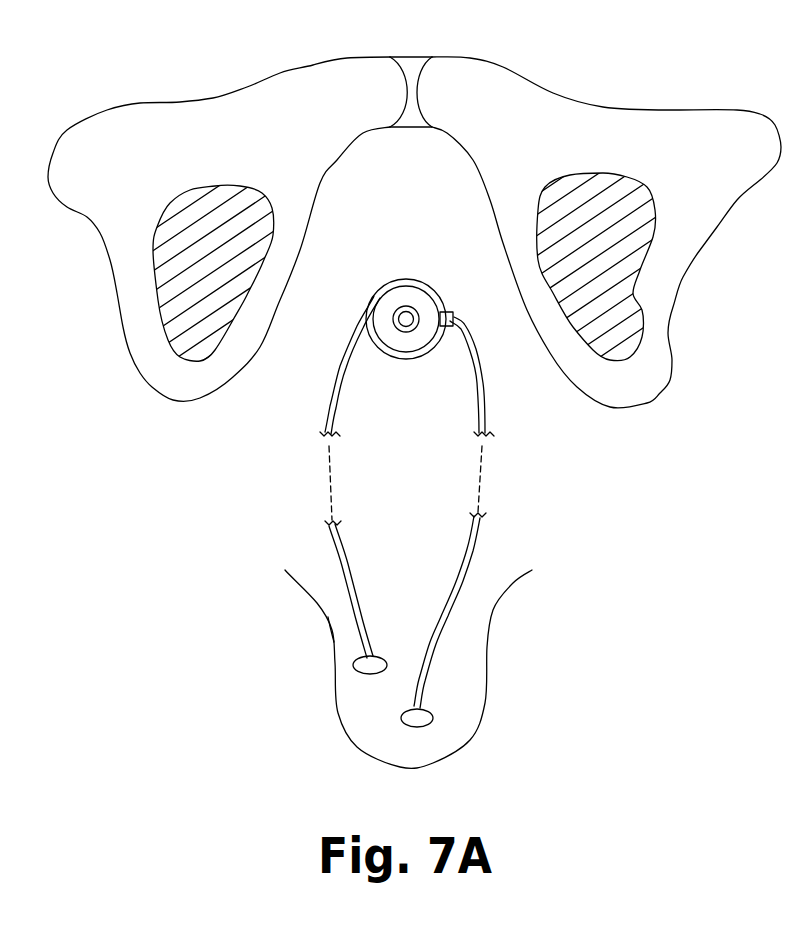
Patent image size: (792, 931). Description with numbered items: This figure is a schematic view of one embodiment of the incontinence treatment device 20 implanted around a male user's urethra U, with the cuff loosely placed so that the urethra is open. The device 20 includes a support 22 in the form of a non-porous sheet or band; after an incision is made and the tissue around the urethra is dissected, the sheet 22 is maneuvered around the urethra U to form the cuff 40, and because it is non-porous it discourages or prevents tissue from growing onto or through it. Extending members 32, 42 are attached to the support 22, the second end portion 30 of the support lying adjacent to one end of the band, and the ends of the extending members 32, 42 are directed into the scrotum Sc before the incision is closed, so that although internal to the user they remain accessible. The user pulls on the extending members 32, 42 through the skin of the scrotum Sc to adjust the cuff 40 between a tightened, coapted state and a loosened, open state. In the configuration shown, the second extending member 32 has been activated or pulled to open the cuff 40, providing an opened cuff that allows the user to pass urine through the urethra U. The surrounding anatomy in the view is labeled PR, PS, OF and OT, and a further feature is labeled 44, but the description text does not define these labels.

The pelvic region / uterine body outline PR is at (253, 343).
The pubic symphysis / fundus notch PS is at (415, 70).
The ovarian fossa / ovary OF is at (197, 175).
The ovarian tissue OT is at (197, 353).
The incontinence treatment device 20 is at (357, 282).
The support 22 is at (397, 357).
The urethra U is at (403, 307).
The connector block 44 is at (450, 310).
The cuff 40 is at (419, 362).
The second end portion 30 is at (352, 587).
The extending member 42 is at (361, 653).
The second extending member 32 is at (450, 618).
The scrotum Sc is at (487, 700).